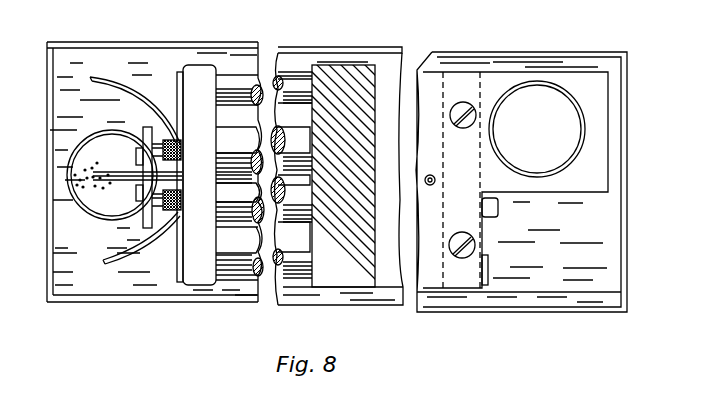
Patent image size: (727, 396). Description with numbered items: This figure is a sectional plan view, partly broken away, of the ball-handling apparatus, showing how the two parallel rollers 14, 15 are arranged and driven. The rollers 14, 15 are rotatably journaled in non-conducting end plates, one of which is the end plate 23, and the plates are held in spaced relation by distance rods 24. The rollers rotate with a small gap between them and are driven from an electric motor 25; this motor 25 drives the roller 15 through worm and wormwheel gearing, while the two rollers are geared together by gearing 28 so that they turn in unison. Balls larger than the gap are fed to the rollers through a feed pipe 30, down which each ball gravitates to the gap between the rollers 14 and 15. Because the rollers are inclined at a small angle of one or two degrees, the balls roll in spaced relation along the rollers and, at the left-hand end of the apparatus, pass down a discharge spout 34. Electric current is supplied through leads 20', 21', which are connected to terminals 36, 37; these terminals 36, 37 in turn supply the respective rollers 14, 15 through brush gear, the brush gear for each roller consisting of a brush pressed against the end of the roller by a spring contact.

The roller 14 is at (225, 222).
The roller 15 is at (238, 130).
The lead 20' is at (125, 272).
The lead 21' is at (132, 83).
The end plate 23 is at (183, 285).
The distance rods 24 is at (231, 82).
The electric motor 25 is at (538, 180).
The gearing 28 is at (168, 178).
The feed pipe 30 is at (433, 186).
The discharge spout 34 is at (100, 187).
The terminal 36 is at (172, 210).
The terminal 37 is at (177, 140).